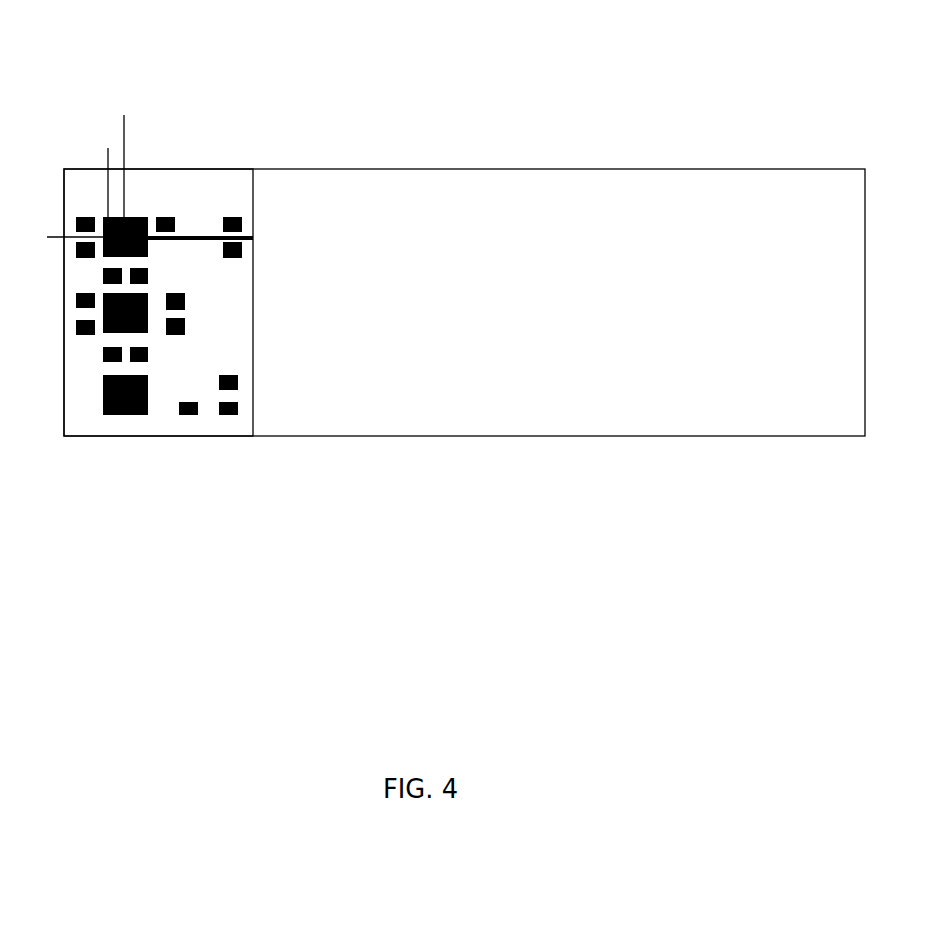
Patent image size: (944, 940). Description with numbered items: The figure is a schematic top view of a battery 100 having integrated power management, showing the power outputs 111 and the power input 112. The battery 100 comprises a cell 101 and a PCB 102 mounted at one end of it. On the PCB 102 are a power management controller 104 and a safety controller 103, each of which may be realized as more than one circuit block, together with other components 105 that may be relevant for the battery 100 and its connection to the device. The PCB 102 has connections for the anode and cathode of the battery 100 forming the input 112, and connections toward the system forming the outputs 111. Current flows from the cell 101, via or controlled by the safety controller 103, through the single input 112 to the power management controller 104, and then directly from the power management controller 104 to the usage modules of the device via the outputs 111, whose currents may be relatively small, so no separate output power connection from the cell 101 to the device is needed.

The battery 100 is at (445, 116).
The cell 101 is at (584, 302).
The PCB 102 is at (67, 437).
The safety controller 103 is at (232, 217).
The power management controller 104 is at (147, 217).
The other components 105 is at (166, 217).
The power outputs 111 is at (52, 237).
The power input 112 is at (252, 236).